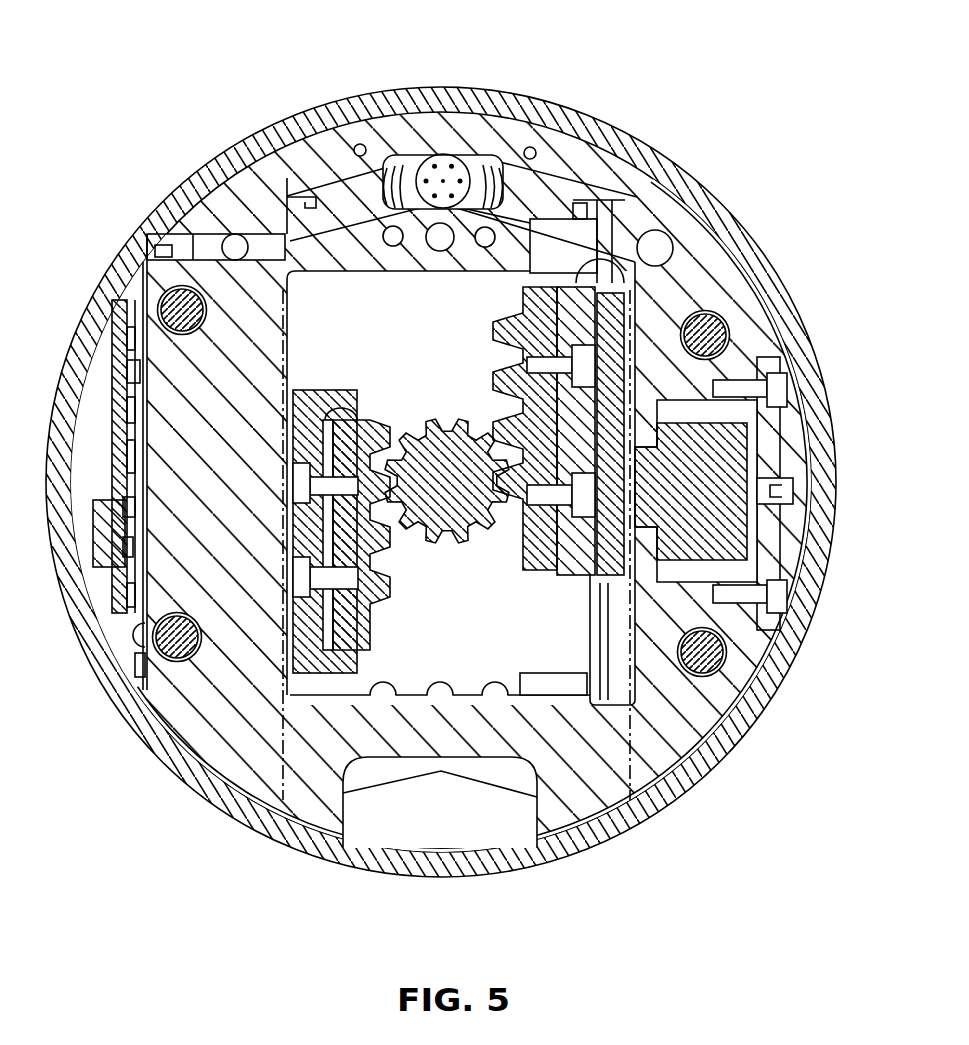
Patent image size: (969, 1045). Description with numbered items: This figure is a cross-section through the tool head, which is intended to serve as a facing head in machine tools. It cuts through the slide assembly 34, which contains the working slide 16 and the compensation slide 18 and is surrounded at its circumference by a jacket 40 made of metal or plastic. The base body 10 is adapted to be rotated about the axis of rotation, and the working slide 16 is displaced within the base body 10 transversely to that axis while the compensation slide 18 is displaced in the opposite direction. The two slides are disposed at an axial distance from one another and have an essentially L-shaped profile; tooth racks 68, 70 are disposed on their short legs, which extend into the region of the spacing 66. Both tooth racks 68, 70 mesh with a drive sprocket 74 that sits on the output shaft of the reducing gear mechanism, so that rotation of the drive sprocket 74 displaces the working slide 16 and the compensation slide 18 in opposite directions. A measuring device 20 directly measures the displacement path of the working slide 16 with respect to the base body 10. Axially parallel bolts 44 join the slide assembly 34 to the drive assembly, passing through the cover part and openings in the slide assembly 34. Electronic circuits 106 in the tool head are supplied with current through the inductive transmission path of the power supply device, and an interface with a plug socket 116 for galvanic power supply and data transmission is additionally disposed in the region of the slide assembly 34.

The base body 10 is at (692, 277).
The working slide 16 is at (614, 257).
The compensation slide 18 is at (307, 392).
The measuring device 20 is at (645, 477).
The slide assembly 34 is at (660, 228).
The jacket 40 is at (778, 480).
The bolts 44 is at (173, 300).
The spacing 66 is at (520, 633).
The tooth rack 68 is at (525, 325).
The tooth rack 70 is at (373, 417).
The drive sprocket 74 is at (443, 463).
The electronic circuits 106 is at (118, 555).
The plug socket 116 is at (443, 172).